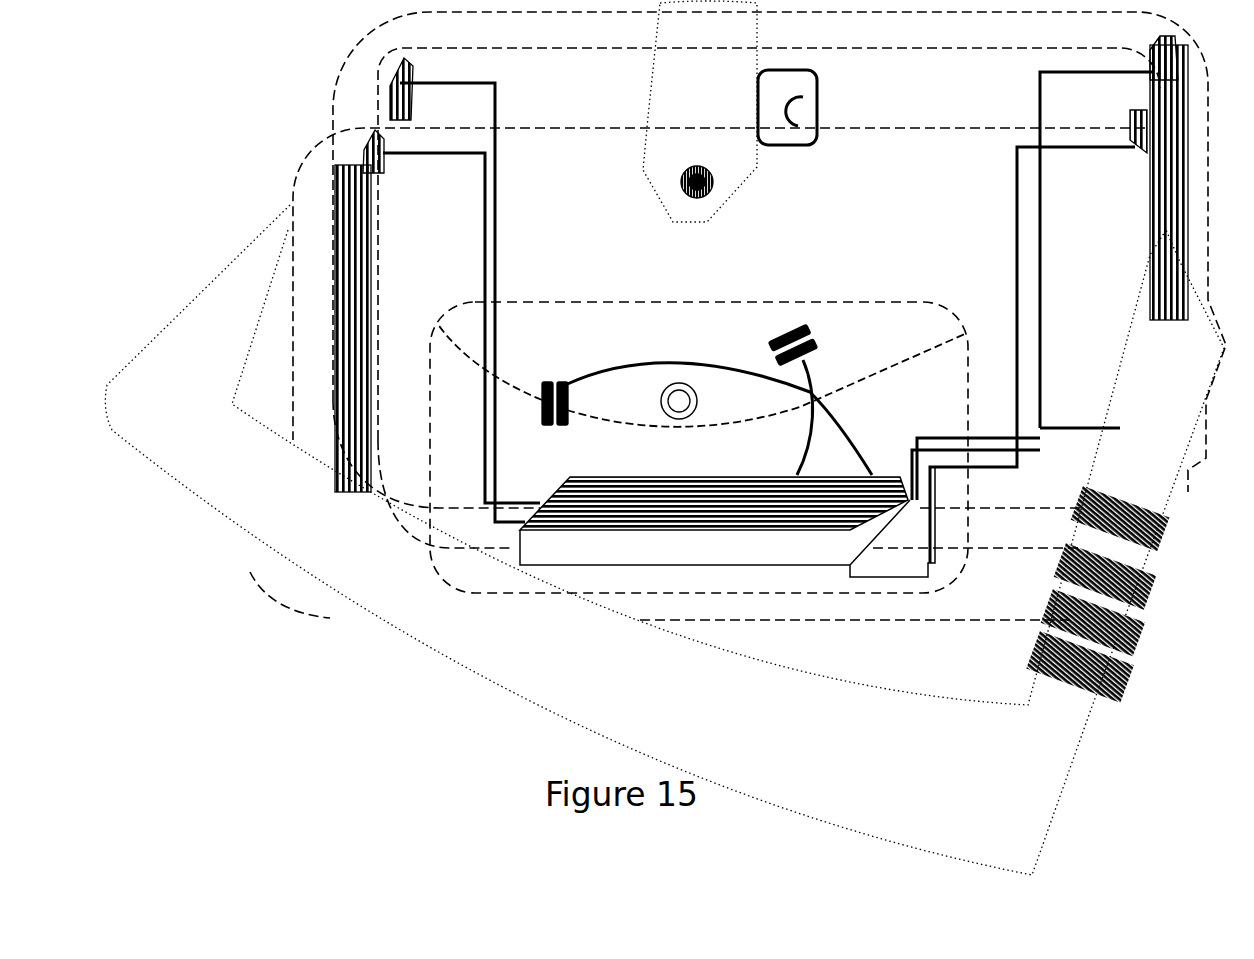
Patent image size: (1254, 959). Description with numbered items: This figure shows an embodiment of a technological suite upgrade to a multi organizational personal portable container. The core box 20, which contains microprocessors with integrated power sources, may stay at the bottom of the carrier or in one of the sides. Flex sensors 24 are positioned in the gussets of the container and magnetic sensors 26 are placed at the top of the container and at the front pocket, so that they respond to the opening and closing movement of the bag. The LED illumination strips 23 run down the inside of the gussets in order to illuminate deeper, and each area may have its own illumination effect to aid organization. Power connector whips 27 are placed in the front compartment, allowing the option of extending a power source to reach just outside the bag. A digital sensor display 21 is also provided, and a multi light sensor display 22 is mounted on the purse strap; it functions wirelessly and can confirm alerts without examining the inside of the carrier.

The core box 20 is at (722, 513).
The digital sensor display 21 is at (822, 105).
The multi light sensor display 22 is at (1142, 603).
The LED illumination strip 23 is at (380, 253).
The flex sensor 24 is at (402, 100).
The magnetic sensor 26 is at (699, 182).
The power connector whips 27 is at (554, 381).